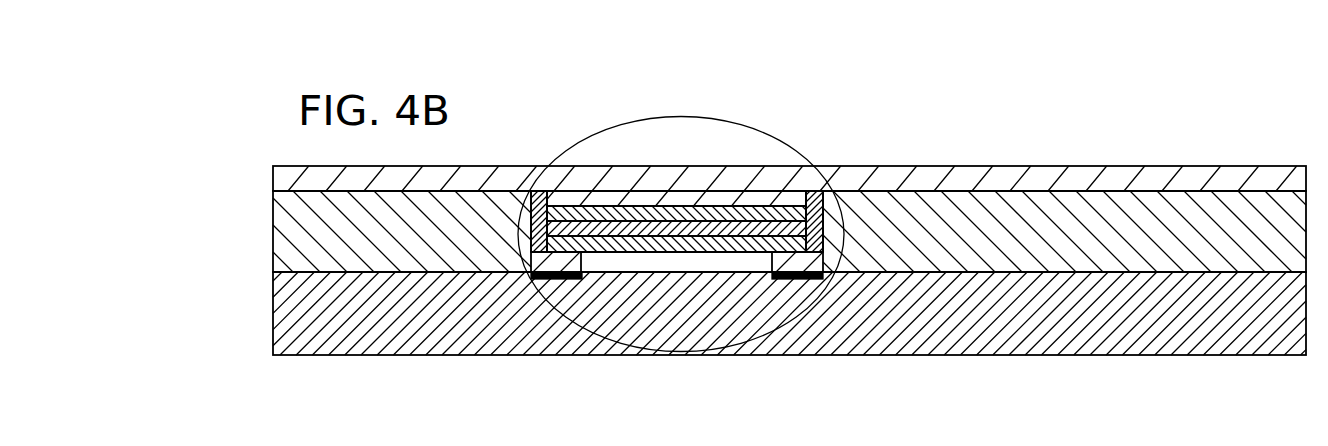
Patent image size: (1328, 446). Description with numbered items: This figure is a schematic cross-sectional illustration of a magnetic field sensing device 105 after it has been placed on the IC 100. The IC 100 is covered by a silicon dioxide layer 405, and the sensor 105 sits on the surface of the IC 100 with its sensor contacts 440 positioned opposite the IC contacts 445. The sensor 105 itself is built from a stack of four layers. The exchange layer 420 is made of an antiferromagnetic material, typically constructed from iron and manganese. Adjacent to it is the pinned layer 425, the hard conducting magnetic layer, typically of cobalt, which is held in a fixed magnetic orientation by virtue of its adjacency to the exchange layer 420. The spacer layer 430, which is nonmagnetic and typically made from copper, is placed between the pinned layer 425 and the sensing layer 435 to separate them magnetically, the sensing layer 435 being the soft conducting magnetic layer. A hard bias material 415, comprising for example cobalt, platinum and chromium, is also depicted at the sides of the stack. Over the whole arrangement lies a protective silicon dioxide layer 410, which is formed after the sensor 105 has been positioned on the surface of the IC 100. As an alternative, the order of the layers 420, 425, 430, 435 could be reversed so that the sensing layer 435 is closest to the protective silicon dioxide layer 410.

The IC 100 is at (273, 318).
The magnetic field sensing device 105 is at (562, 146).
The silicon dioxide layer 405 is at (273, 238).
The protective silicon dioxide layer 410 is at (273, 178).
The hard bias material 415 is at (541, 191).
The exchange layer 420 is at (596, 200).
The pinned layer 425 is at (660, 215).
The spacer layer 430 is at (726, 230).
The sensing layer 435 is at (760, 248).
The sensor contacts 440 is at (773, 261).
The IC contacts 445 is at (546, 279).